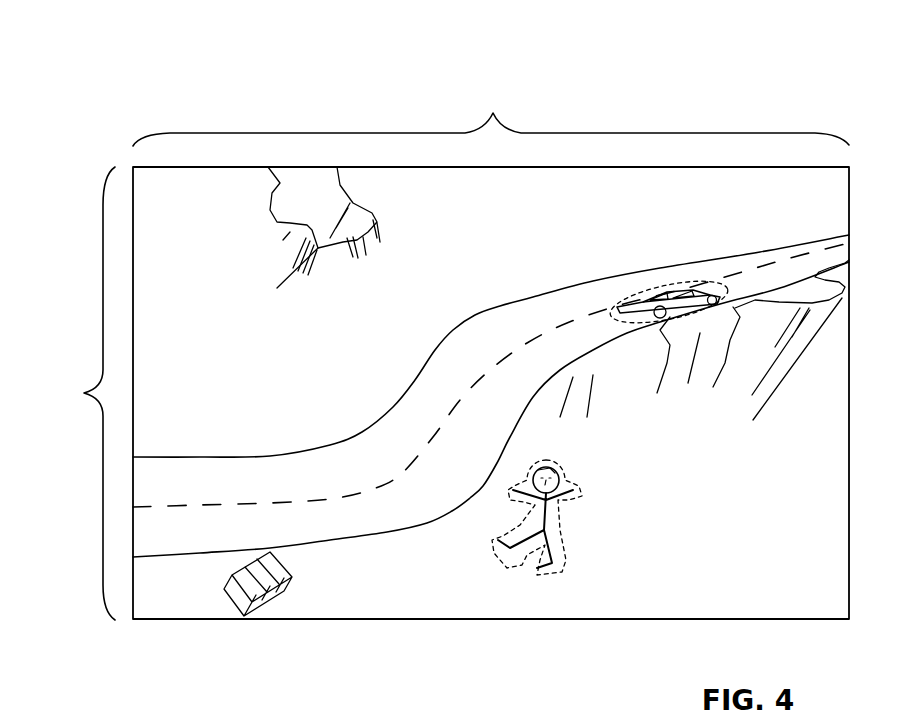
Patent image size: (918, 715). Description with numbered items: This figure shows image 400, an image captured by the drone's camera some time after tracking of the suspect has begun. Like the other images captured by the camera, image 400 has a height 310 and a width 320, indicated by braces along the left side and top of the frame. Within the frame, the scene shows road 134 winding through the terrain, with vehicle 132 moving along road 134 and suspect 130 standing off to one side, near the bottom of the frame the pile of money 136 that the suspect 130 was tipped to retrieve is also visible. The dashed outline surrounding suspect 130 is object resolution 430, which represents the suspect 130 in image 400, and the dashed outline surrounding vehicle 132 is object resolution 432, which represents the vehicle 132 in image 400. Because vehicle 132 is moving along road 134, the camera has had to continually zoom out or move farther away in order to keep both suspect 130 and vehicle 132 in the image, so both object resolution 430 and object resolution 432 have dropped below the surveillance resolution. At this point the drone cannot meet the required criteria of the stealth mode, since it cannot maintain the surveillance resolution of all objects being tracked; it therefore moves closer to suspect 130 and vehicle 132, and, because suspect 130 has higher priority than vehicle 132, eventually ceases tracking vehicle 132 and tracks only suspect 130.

The image 400 is at (150, 58).
The width 320 is at (491, 102).
The height 310 is at (67, 393).
The road 134 is at (531, 299).
The vehicle 132 is at (633, 300).
The object resolution 432 is at (611, 314).
The suspect 130 is at (550, 468).
The object resolution 430 is at (579, 492).
The pile of money 136 is at (298, 573).